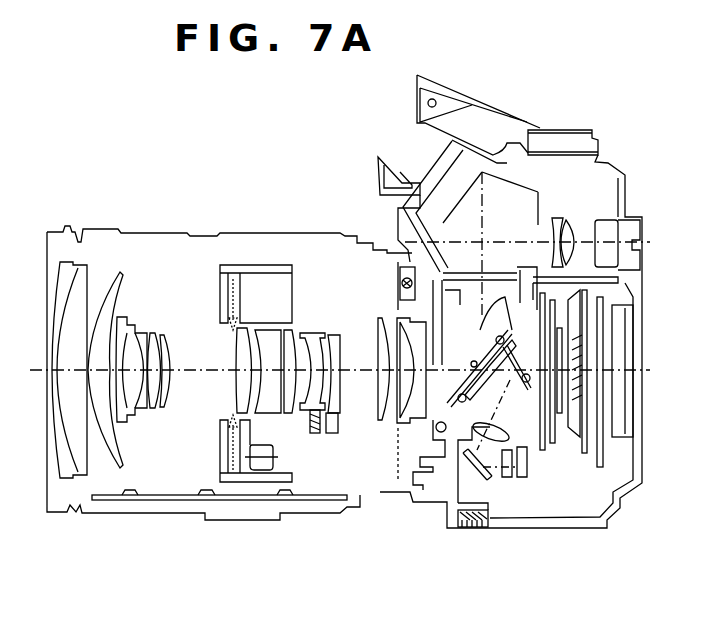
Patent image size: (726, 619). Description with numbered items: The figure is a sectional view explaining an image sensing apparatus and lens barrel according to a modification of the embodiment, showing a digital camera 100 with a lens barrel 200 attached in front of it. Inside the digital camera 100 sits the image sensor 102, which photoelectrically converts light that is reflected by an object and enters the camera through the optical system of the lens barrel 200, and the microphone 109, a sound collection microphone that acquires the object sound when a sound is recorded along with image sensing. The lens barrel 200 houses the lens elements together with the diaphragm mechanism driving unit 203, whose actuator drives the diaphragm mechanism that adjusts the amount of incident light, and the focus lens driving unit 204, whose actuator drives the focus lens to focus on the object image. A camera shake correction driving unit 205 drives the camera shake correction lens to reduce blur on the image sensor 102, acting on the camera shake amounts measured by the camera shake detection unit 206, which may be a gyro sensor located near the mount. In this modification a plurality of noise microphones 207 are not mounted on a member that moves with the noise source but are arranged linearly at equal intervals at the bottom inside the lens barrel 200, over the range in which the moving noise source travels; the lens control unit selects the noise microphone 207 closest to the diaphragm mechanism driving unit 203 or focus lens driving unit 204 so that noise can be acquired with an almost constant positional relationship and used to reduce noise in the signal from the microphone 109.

The digital camera 100 is at (622, 172).
The image sensor 102 is at (582, 400).
The microphone 109 is at (487, 510).
The lens barrel 200 is at (162, 228).
The diaphragm mechanism driving unit 203 is at (260, 468).
The focus lens driving unit 204 is at (146, 432).
The camera shake correction driving unit 205 is at (315, 433).
The camera shake detection unit 206 is at (402, 262).
The noise microphone 207 is at (128, 498).